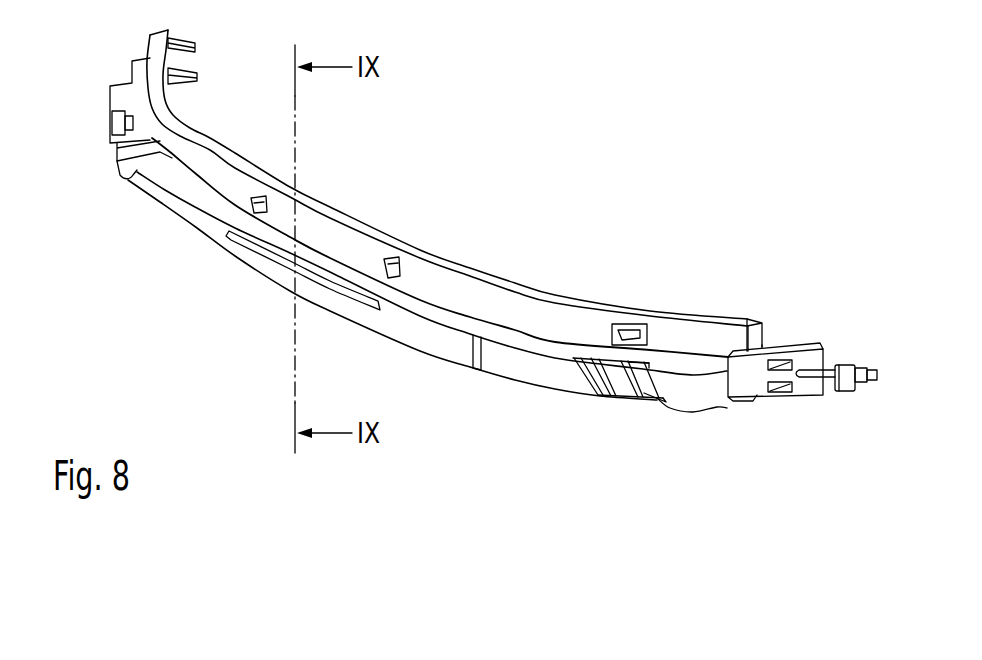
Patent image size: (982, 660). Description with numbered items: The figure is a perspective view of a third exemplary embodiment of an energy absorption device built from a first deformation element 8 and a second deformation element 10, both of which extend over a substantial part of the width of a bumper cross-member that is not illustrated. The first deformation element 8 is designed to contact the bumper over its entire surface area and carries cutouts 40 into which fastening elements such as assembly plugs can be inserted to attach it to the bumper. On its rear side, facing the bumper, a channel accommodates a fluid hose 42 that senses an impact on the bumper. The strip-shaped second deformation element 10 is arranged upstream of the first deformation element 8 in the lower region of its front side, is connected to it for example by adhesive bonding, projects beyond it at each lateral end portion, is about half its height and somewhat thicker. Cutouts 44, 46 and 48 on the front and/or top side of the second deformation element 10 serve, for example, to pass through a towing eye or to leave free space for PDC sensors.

The first deformation element 8 is at (478, 297).
The second deformation element 10 is at (408, 333).
The cutouts 40 is at (257, 198).
The fluid hose 42 is at (845, 391).
The cutout 44 is at (100, 130).
The cutout 46 is at (233, 247).
The cutout 48 is at (113, 165).